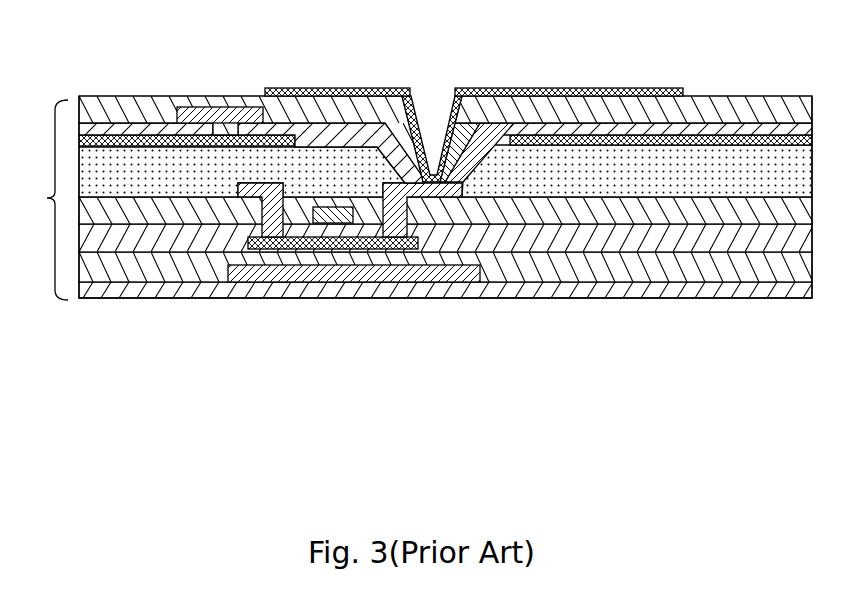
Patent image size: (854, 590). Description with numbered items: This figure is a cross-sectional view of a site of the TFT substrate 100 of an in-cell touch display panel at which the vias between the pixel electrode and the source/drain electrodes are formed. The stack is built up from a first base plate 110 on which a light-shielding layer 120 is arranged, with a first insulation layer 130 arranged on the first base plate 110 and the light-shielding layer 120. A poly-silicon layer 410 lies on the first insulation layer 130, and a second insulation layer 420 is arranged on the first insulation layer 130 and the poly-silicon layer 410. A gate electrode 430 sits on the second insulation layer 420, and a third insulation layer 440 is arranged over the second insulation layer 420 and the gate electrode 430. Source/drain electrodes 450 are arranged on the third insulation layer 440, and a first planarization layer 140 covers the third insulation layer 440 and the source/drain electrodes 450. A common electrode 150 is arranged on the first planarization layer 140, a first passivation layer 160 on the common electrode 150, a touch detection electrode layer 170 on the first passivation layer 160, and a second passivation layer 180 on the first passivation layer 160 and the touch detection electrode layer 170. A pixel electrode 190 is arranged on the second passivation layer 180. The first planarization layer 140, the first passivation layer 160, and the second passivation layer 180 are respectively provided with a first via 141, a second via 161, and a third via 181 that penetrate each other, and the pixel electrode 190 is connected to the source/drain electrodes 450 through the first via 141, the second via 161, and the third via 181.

The TFT substrate 100 is at (35, 200).
The first base plate 110 is at (83, 292).
The light-shielding layer 120 is at (295, 237).
The first insulation layer 130 is at (140, 285).
The first planarization layer 140 is at (623, 183).
The first via 141 is at (480, 128).
The common electrode 150 is at (160, 146).
The first passivation layer 160 is at (688, 130).
The second via 161 is at (459, 118).
The touch detection electrode layer 170 is at (212, 113).
The second passivation layer 180 is at (780, 113).
The third via 181 is at (448, 113).
The pixel electrode 190 is at (615, 88).
The poly-silicon layer 410 is at (387, 225).
The second insulation layer 420 is at (497, 238).
The gate electrode 430 is at (338, 223).
The third insulation layer 440 is at (543, 213).
The source/drain electrodes 450 is at (427, 242).